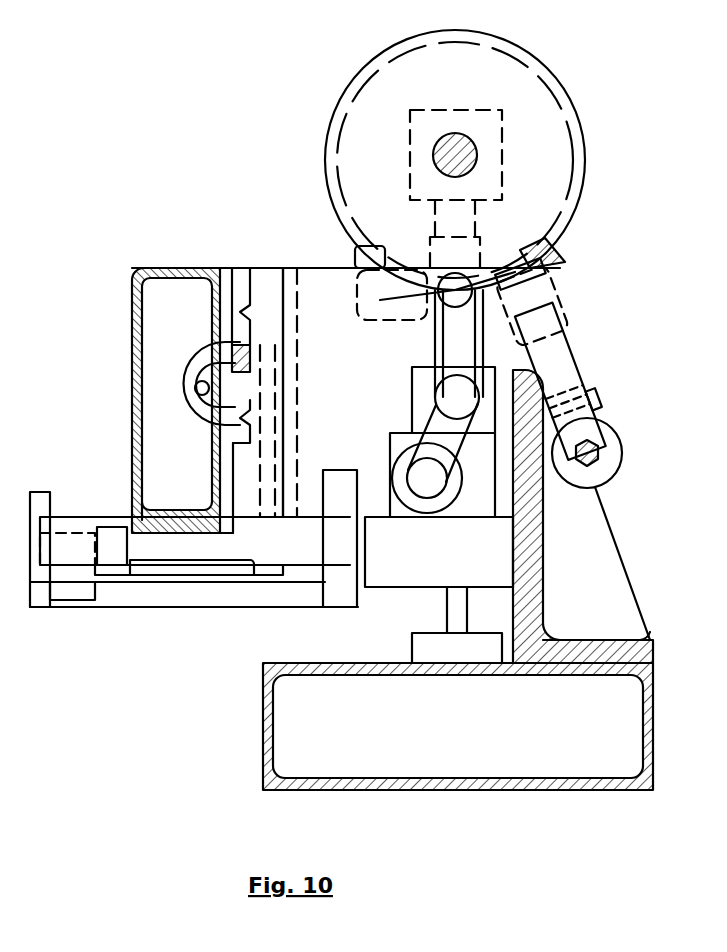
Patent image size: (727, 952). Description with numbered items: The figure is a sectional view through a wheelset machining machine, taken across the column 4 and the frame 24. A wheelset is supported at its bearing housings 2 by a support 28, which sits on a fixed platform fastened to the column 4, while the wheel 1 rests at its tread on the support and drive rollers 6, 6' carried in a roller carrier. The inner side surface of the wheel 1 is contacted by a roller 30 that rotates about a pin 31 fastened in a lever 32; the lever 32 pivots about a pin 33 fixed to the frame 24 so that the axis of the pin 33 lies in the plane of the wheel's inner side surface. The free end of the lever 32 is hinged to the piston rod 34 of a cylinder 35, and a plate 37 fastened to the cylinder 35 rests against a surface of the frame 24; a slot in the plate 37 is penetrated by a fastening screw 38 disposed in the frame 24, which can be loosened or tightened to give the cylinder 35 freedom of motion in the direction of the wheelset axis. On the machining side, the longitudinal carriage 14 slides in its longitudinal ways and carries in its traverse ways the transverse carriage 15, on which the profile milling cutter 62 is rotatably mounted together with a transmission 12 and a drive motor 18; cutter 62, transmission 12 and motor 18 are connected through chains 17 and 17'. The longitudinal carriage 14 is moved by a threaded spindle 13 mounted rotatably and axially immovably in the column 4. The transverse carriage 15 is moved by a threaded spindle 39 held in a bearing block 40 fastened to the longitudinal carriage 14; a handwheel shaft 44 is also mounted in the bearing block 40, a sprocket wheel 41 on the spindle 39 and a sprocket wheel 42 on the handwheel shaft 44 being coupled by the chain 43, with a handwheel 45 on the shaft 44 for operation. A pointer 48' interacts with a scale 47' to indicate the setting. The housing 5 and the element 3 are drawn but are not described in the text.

The wheel 1 is at (495, 65).
The bearing housing 2 is at (478, 122).
The shaft 3 is at (462, 160).
The support 28 is at (468, 225).
The profile milling cutter 62 is at (440, 258).
The roller 30 is at (545, 256).
The pin 31 is at (555, 273).
The support and drive roller 6 is at (416, 266).
The support and drive roller 6' is at (547, 300).
The chain 17' is at (392, 295).
The housing 5 is at (200, 280).
The longitudinal carriage 14 is at (262, 308).
The transverse carriage 15 is at (330, 345).
The threaded spindle 39 is at (245, 352).
The threaded spindle 13 is at (197, 382).
The transmission 12 is at (420, 412).
The chain 17 is at (457, 377).
The drive motor 18 is at (437, 497).
The lever 32 is at (580, 374).
The pin 33 is at (596, 386).
The fastening screw 38 is at (619, 403).
The plate 37 is at (600, 448).
The piston rod 34 is at (604, 462).
The cylinder 35 is at (624, 560).
The frame 24 is at (535, 605).
The column 4 is at (592, 692).
The bearing block 40 is at (148, 545).
The sprocket wheel 42 is at (110, 565).
The handwheel shaft 44 is at (105, 540).
The handwheel 45 is at (165, 575).
The chain 43 is at (192, 572).
The scale 47' is at (29, 528).
The pointer 48' is at (190, 600).
The sprocket wheel 41 is at (265, 580).